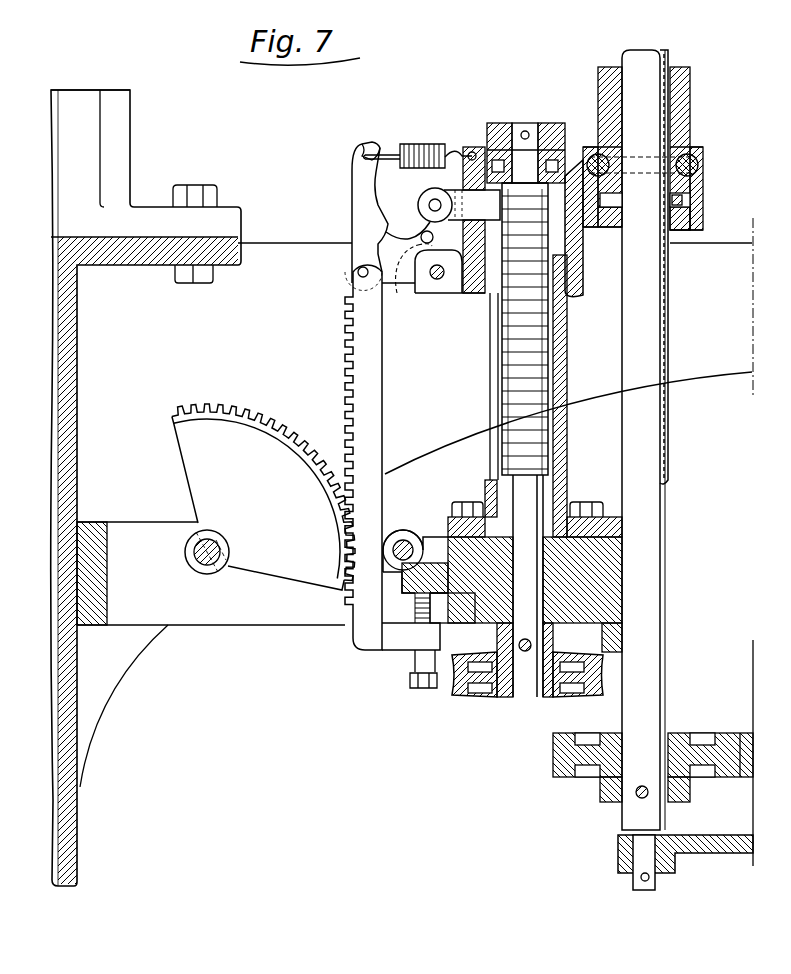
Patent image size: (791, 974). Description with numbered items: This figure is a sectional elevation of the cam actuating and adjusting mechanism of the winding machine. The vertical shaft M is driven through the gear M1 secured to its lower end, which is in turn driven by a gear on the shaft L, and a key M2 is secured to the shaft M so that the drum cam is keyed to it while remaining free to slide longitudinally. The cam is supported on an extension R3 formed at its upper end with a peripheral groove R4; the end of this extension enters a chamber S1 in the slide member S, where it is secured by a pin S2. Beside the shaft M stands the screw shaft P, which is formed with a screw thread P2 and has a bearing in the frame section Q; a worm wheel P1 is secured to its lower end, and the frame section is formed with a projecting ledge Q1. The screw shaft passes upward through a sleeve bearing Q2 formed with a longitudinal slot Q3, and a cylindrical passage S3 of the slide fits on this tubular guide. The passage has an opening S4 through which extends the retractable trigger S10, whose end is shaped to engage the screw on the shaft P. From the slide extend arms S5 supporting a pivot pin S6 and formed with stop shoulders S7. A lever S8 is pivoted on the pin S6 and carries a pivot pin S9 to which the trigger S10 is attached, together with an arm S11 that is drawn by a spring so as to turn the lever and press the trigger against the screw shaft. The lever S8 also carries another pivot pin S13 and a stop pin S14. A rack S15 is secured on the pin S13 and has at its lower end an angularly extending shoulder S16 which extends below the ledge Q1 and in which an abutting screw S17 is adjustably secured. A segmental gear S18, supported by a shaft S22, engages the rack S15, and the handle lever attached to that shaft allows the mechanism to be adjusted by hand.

The segmental gear S18 is at (282, 432).
The shaft S22 is at (203, 545).
The rack S15 is at (353, 404).
The pivot pin S13 is at (358, 274).
The arm S11 is at (358, 176).
The pivot pin S9 is at (395, 150).
The abutting screw S17 is at (424, 144).
The opening S4 is at (472, 150).
The retractable trigger S10 is at (459, 205).
The lever S8 is at (404, 240).
The stop pin S14 is at (421, 238).
The arms S5 is at (440, 294).
The pivot pin S6 is at (440, 280).
The stop shoulders S7 is at (400, 296).
The screw thread P2 is at (510, 342).
The pin S2 is at (580, 160).
The slide member S is at (584, 262).
The cylindrical passage S3 is at (583, 290).
The sleeve bearing Q2 is at (567, 354).
The longitudinal slot Q3 is at (490, 378).
The screw shaft P is at (512, 586).
The projecting ledge Q1 is at (404, 600).
The angularly extending shoulder S16 is at (411, 655).
The frame section Q is at (544, 670).
The worm wheel P1 is at (456, 695).
The shaft M is at (643, 440).
The key M2 is at (668, 430).
The extension R3 is at (598, 90).
The peripheral groove R4 is at (690, 164).
The chamber S1 is at (685, 200).
The shaft L is at (742, 716).
The gear M1 is at (553, 760).